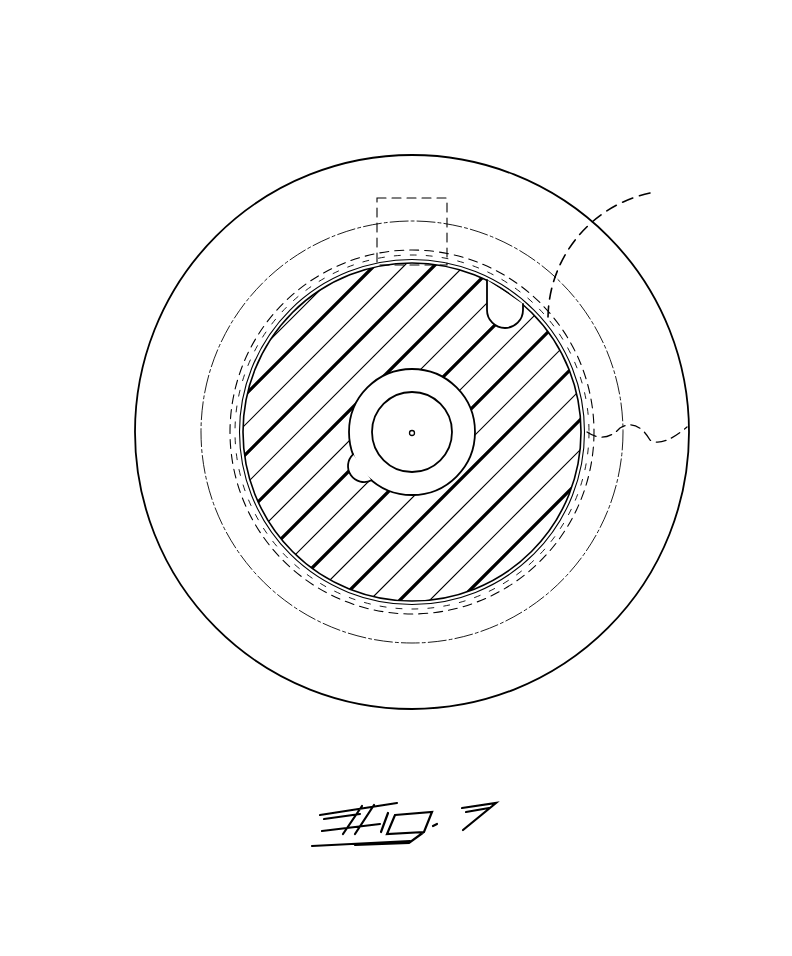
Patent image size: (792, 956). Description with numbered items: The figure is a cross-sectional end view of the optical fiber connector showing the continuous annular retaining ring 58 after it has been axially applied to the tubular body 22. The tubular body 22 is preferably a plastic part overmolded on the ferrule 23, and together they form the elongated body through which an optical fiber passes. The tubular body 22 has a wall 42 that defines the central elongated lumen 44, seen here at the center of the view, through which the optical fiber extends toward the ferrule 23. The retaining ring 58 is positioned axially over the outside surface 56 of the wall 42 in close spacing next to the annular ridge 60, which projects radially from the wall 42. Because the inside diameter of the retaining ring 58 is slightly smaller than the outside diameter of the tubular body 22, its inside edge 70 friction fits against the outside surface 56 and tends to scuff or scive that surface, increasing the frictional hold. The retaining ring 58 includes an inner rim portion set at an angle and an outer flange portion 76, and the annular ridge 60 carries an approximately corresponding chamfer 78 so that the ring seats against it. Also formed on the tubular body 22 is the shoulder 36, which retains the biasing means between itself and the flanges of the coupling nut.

The tubular body 22 is at (280, 311).
The ferrule 23 is at (366, 416).
The shoulder 36 is at (687, 427).
The wall 42 is at (528, 370).
The lumen 44 is at (302, 556).
The outside surface 56 is at (460, 592).
The retaining ring 58 is at (673, 562).
The annular ridge 60 is at (622, 244).
The inside edge 70 is at (487, 300).
The outer flange portion 76 is at (593, 608).
The chamfer 78 is at (603, 388).